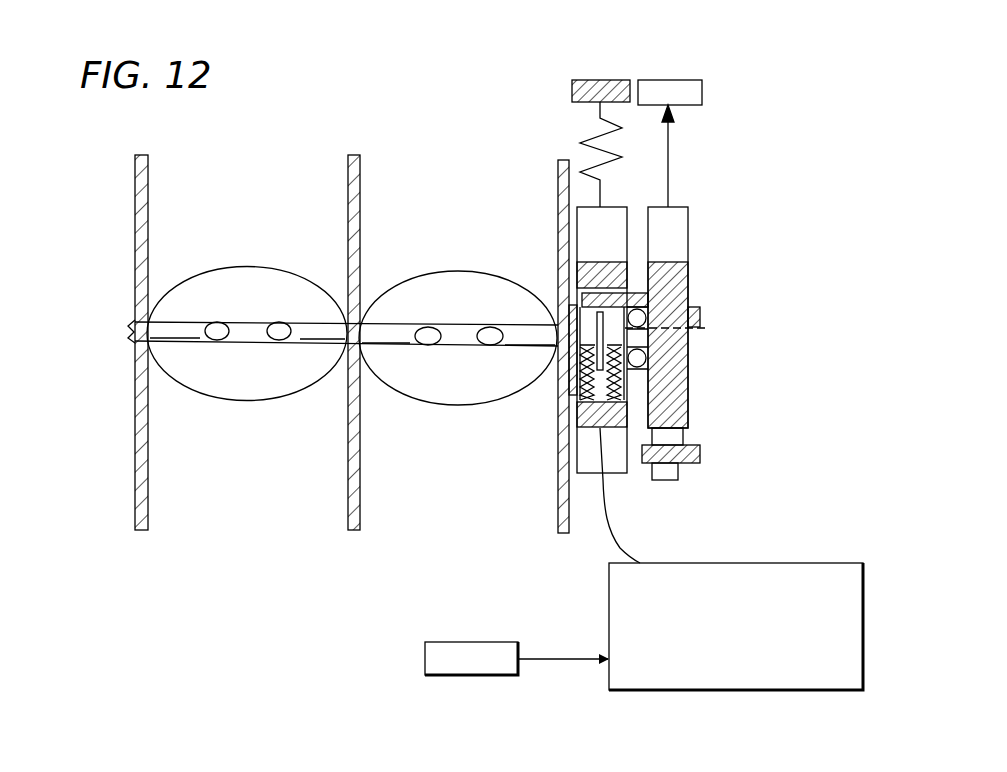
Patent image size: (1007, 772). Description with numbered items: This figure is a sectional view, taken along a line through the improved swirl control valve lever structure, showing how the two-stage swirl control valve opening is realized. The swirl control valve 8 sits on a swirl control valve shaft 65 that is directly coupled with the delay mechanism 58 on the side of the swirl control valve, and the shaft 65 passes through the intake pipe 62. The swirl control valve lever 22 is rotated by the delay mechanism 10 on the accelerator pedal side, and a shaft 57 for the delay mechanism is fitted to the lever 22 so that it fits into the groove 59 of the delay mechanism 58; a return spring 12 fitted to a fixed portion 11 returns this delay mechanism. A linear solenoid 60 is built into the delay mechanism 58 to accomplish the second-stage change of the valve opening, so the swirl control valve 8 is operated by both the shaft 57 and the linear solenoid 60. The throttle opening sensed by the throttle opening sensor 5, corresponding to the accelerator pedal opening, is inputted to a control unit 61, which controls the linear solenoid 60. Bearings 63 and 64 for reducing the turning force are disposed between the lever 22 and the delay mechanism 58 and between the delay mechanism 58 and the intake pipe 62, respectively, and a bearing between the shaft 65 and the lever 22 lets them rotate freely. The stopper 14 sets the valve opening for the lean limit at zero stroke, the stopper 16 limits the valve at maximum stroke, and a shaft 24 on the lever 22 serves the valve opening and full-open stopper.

The throttle opening sensor 5 is at (478, 641).
The swirl control valve 8 is at (280, 400).
The delay mechanism 10 is at (672, 80).
The fixed portion 11 is at (598, 80).
The return spring 12 is at (583, 148).
The stopper 14 is at (702, 453).
The stopper 16 is at (702, 322).
The swirl control valve lever 22 is at (688, 238).
The shaft for swirl control valve opening and full-open stopper 24 is at (665, 481).
The shaft for the delay mechanism 57 is at (645, 300).
The delay mechanism on the side of the swirl control valve 58 is at (612, 214).
The groove 59 is at (586, 302).
The linear solenoid 60 is at (577, 408).
The control unit 61 is at (790, 563).
The intake pipe 62 is at (558, 165).
The bearing 63 is at (645, 357).
The bearing 64 is at (590, 318).
The swirl control valve shaft 65 is at (243, 333).